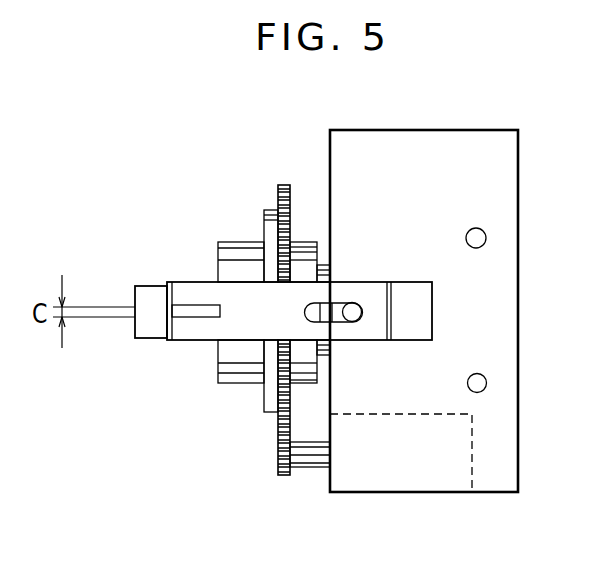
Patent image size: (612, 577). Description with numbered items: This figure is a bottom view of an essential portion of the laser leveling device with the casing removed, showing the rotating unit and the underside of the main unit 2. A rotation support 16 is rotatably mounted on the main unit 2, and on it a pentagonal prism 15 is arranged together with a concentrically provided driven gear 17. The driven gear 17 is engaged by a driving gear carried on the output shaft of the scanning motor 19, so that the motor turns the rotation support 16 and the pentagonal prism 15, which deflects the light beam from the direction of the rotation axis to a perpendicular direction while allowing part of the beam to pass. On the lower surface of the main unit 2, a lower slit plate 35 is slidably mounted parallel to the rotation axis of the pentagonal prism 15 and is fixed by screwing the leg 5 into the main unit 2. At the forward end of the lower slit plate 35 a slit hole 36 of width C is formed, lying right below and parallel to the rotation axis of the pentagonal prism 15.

The main unit 2 is at (477, 130).
The leg 5 is at (486, 236).
The pentagonal prism 15 is at (150, 285).
The rotation support 16 is at (236, 242).
The driven gear 17 is at (282, 185).
The scanning motor 19 is at (353, 485).
The lower slit plate 35 is at (247, 340).
The slit hole 36 is at (192, 318).